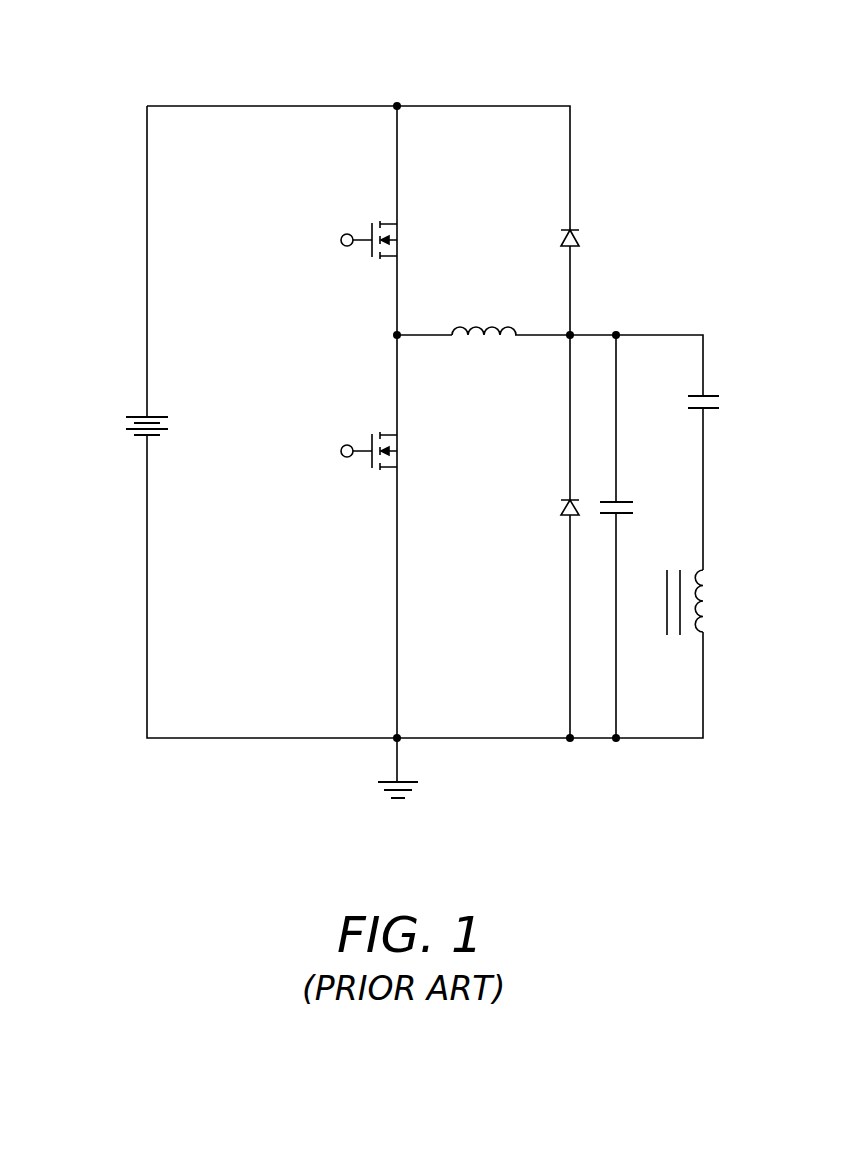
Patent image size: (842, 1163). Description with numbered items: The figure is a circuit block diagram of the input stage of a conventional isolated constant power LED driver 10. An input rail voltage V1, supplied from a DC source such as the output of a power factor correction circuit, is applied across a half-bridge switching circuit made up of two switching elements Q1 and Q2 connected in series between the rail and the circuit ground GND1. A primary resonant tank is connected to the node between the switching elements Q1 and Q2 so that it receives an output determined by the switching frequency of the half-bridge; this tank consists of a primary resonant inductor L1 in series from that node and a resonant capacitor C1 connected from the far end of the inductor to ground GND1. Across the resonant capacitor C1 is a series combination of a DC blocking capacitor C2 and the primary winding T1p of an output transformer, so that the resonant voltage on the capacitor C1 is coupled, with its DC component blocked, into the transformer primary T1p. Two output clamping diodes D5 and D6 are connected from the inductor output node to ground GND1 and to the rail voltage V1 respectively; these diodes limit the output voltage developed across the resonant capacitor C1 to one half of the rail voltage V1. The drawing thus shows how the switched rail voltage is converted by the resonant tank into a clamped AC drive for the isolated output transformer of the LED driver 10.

The isolated constant power LED driver 10 is at (116, 59).
The input rail voltage V1 is at (126, 434).
The switching element Q1 is at (363, 226).
The switching element Q2 is at (363, 438).
The output clamping diode D6 is at (547, 243).
The output clamping diode D5 is at (547, 513).
The primary resonant inductor L1 is at (482, 313).
The resonant capacitor C1 is at (636, 514).
The DC blocking capacitor C2 is at (682, 408).
The primary winding for an output transformer T1p is at (712, 612).
The ground GND1 is at (397, 820).